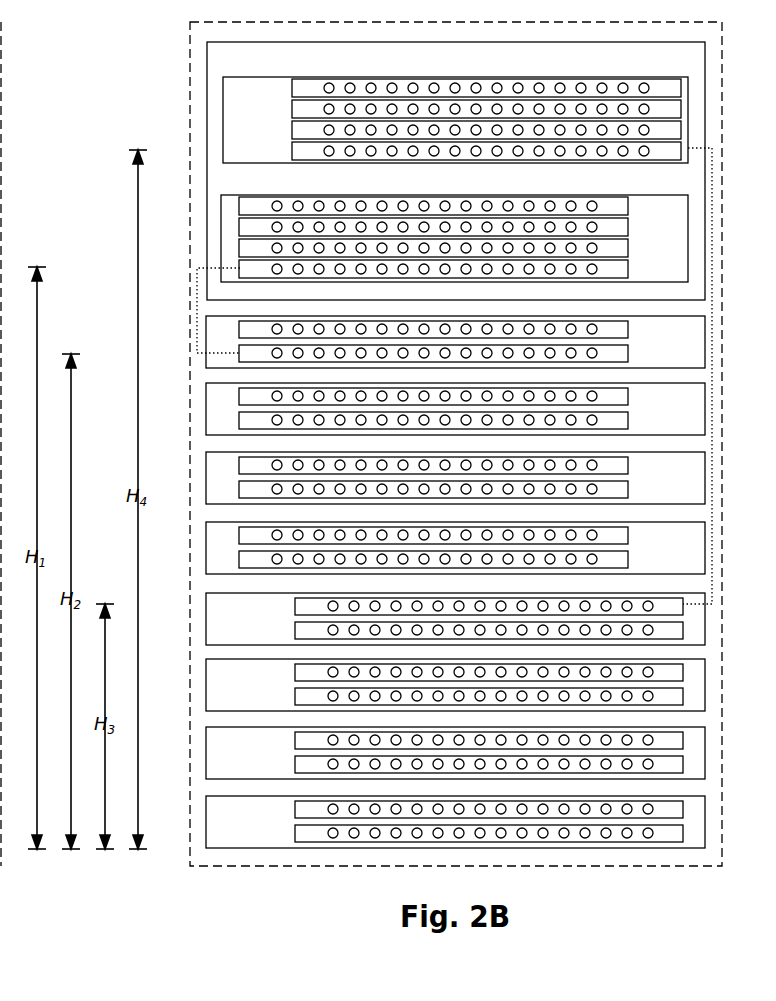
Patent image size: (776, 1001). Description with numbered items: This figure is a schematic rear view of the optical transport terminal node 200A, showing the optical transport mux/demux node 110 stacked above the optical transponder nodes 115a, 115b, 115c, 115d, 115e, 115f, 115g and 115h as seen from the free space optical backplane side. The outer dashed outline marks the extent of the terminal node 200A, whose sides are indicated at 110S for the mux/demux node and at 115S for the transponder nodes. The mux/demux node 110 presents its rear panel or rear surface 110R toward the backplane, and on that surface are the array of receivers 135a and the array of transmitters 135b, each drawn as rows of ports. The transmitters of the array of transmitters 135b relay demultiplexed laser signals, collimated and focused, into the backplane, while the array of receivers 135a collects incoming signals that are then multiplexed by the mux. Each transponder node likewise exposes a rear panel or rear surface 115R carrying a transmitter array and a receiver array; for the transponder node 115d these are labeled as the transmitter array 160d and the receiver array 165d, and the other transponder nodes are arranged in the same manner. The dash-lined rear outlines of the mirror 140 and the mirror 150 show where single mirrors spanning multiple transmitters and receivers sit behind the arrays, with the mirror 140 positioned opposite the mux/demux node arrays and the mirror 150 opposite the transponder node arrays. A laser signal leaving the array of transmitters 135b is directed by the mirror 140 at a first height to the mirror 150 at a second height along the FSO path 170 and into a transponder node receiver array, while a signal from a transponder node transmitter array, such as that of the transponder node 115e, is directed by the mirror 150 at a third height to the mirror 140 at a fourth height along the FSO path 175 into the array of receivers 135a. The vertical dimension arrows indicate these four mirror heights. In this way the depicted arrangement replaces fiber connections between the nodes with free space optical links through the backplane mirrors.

The optical transport mux/demux node 110 is at (456, 171).
The side of optical transport mux/demux node 110S is at (184, 75).
The rear panel or rear surface of the optical transport mux/demux node 110R is at (226, 113).
The array of receivers 135a is at (455, 134).
The array of transmitters 135b is at (454, 238).
The mirror 140 is at (573, 152).
The mirror 150 is at (270, 357).
The transmitter array 160d is at (243, 537).
The receiver array 165d is at (243, 559).
The FSO path 170 is at (197, 283).
The FSO path 175 is at (714, 315).
The optical transponder node 115a is at (427, 360).
The optical transponder node 115b is at (455, 409).
The optical transponder node 115c is at (455, 478).
The optical transponder node 115d is at (424, 569).
The optical transponder node 115e is at (455, 619).
The optical transponder node 115f is at (455, 685).
The optical transponder node 115g is at (455, 753).
The optical transponder node 115h is at (455, 822).
The side of transponder shelf 115S is at (186, 846).
The rear panel or rear surface of the optical transponder node 115R is at (273, 836).
The optical transport terminal node 200A is at (643, 905).